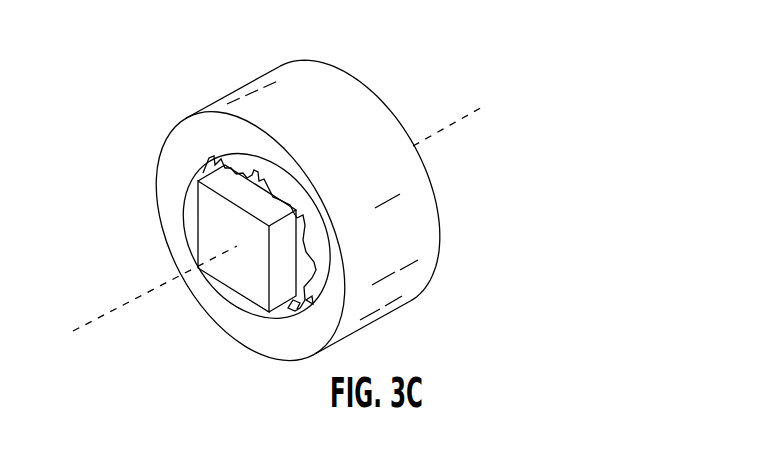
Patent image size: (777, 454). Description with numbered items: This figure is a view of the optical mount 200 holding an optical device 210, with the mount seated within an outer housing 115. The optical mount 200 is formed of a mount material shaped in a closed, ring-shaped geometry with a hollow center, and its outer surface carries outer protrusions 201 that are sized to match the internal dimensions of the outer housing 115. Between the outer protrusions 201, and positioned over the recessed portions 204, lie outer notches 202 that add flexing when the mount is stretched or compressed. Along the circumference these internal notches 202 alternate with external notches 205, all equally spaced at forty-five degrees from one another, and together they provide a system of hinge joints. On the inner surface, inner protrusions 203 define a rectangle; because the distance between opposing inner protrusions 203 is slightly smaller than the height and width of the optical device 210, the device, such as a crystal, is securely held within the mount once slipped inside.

The outer housing 115 is at (335, 88).
The optical mount 200 is at (163, 208).
The outer protrusions 201 is at (218, 152).
The internal notches 202 is at (259, 165).
The inner protrusions 203 is at (282, 200).
The recessed portions 204 is at (320, 247).
The external notches 205 is at (303, 310).
The optical device 210 is at (237, 281).